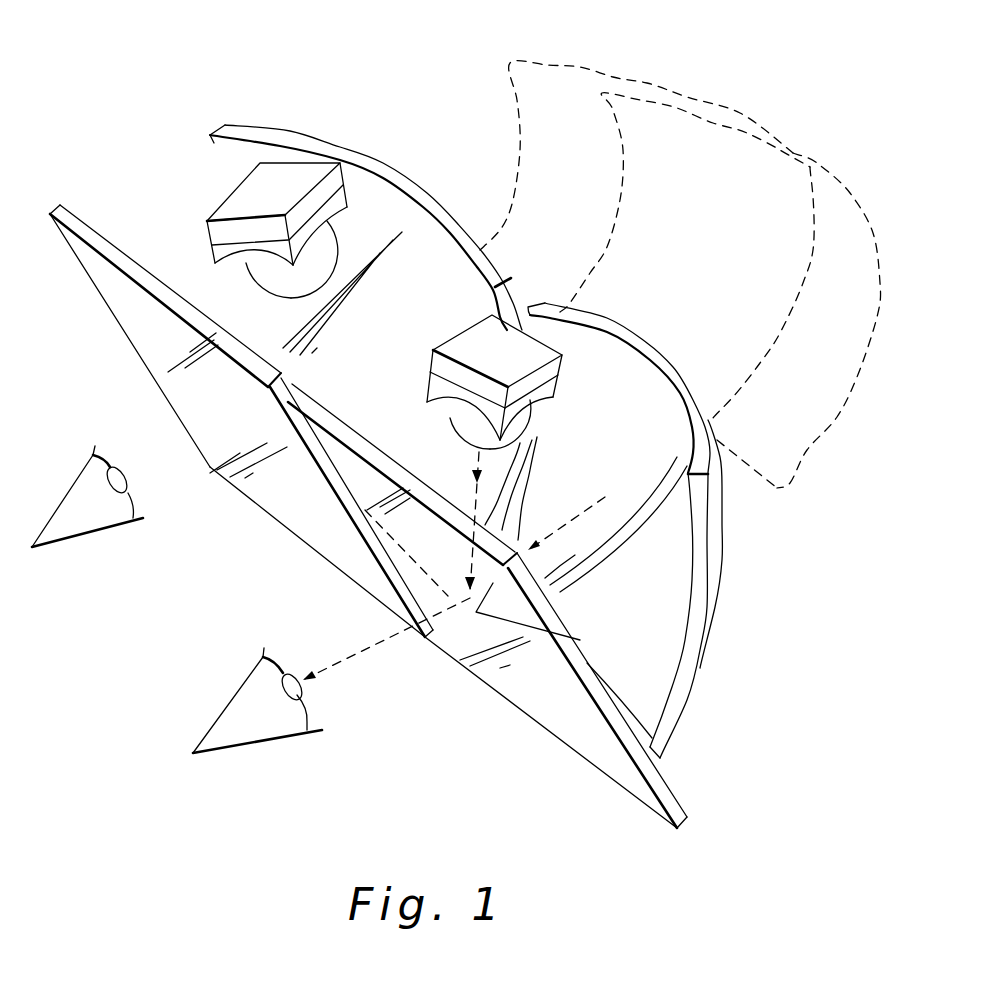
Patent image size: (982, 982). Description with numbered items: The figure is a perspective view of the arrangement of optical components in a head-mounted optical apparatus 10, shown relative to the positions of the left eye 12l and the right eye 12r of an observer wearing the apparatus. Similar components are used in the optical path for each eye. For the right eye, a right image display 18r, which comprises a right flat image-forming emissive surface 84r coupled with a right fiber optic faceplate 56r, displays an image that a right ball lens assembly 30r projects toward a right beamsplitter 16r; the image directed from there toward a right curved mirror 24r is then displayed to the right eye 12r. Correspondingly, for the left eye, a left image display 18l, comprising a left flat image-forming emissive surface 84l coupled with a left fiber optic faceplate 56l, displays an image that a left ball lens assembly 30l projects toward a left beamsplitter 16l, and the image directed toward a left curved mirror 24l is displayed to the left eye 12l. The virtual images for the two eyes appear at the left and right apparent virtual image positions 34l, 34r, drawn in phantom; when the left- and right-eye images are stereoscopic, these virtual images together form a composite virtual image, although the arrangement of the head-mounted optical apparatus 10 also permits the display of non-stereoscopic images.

The head-mounted optical apparatus 10 is at (210, 61).
The left eye 12l is at (87, 525).
The right eye 12r is at (268, 728).
The left beamsplitter 16l is at (113, 302).
The right beamsplitter 16r is at (520, 705).
The left image display 18l is at (366, 142).
The right image display 18r is at (545, 330).
The left curved mirror 24l is at (212, 150).
The right curved mirror 24r is at (715, 605).
The left ball lens assembly 30l is at (340, 243).
The right ball lens assembly 30r is at (531, 416).
The left apparent virtual image position 34l is at (585, 68).
The right apparent virtual image position 34r is at (837, 410).
The left fiber optic faceplate 56l is at (213, 257).
The right fiber optic faceplate 56r is at (423, 387).
The left flat image-forming emissive surface 84l is at (215, 203).
The right flat image-forming emissive surface 84r is at (463, 327).